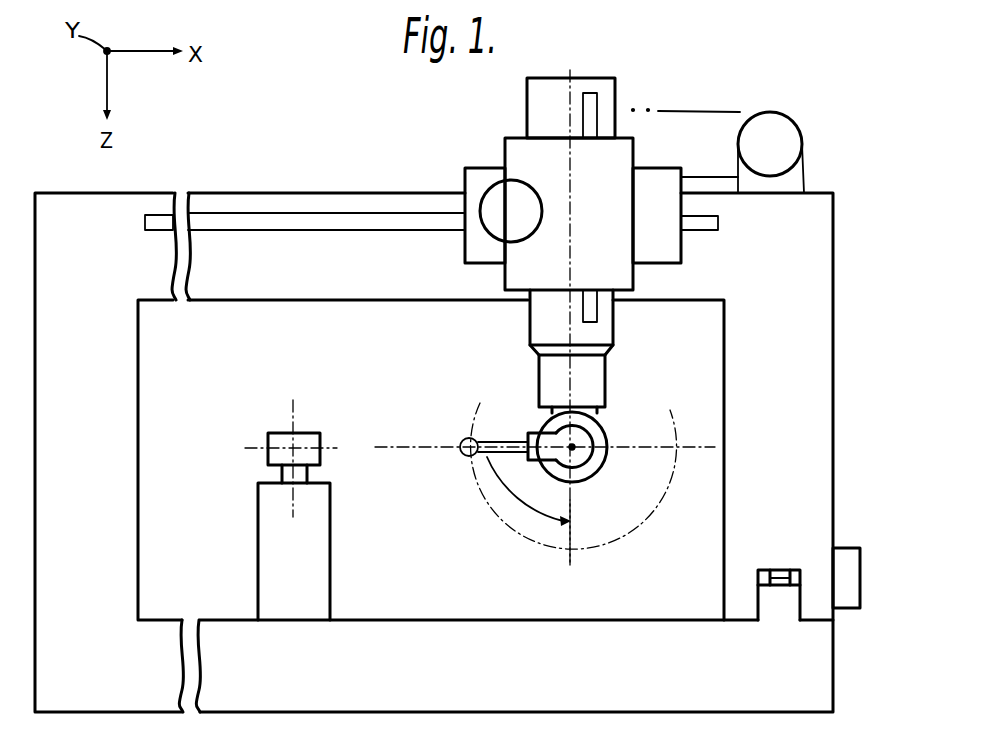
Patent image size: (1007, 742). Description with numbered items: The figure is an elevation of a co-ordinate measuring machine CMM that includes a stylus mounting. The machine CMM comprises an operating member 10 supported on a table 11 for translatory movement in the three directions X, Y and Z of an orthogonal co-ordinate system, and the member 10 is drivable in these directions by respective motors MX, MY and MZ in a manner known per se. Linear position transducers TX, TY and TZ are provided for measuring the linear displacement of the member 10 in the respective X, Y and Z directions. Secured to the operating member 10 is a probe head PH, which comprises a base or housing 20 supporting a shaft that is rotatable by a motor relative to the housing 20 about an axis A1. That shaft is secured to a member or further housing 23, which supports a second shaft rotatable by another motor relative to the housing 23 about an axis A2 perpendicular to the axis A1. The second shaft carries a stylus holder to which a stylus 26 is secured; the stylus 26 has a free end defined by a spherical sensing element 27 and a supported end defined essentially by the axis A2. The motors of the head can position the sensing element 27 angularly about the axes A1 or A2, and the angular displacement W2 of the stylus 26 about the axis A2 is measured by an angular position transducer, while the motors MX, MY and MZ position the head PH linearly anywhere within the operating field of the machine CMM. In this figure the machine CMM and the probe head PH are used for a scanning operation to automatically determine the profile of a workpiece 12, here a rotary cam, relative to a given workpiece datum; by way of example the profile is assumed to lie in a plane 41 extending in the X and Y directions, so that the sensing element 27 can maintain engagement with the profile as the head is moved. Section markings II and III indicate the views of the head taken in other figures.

The co-ordinate measuring machine CMM is at (294, 186).
The linear position transducer TX is at (375, 217).
The linear position transducer TZ is at (590, 93).
The linear position transducer TY is at (780, 572).
The motor MX is at (773, 122).
The motor MZ is at (500, 200).
The motor MY is at (848, 563).
The probe head PH is at (563, 351).
The operating member 10 is at (603, 329).
The base or housing 20 is at (548, 380).
The member or further housing 23 is at (597, 435).
The stylus 26 is at (500, 462).
The spherical sensing element 27 is at (466, 438).
The axis A1 is at (570, 566).
The axis A2 is at (574, 449).
The angular displacement W2 is at (517, 495).
The section line II is at (699, 440).
The viewing direction III is at (581, 367).
The table 11 is at (665, 627).
The workpiece 12 is at (296, 407).
The plane 41 is at (255, 447).